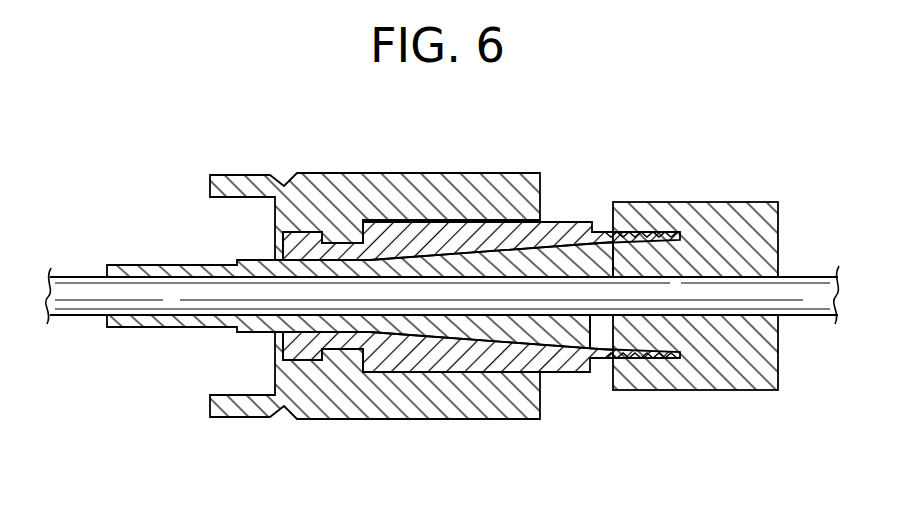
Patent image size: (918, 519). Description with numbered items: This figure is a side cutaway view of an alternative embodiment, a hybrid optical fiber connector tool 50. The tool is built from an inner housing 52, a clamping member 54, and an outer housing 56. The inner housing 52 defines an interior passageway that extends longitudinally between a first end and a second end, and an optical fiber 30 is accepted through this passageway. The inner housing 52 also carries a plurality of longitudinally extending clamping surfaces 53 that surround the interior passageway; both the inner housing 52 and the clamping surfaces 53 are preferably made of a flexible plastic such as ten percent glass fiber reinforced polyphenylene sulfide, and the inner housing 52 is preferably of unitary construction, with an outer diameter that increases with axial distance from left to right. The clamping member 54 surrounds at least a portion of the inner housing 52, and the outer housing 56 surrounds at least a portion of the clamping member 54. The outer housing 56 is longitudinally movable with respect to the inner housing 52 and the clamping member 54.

The hybrid optical fiber connector tool 50 is at (494, 278).
The optical fiber 30 is at (73, 318).
The inner housing 52 is at (713, 213).
The longitudinally extending clamping surfaces 53 is at (571, 340).
The clamping member 54 is at (567, 230).
The outer housing 56 is at (377, 407).